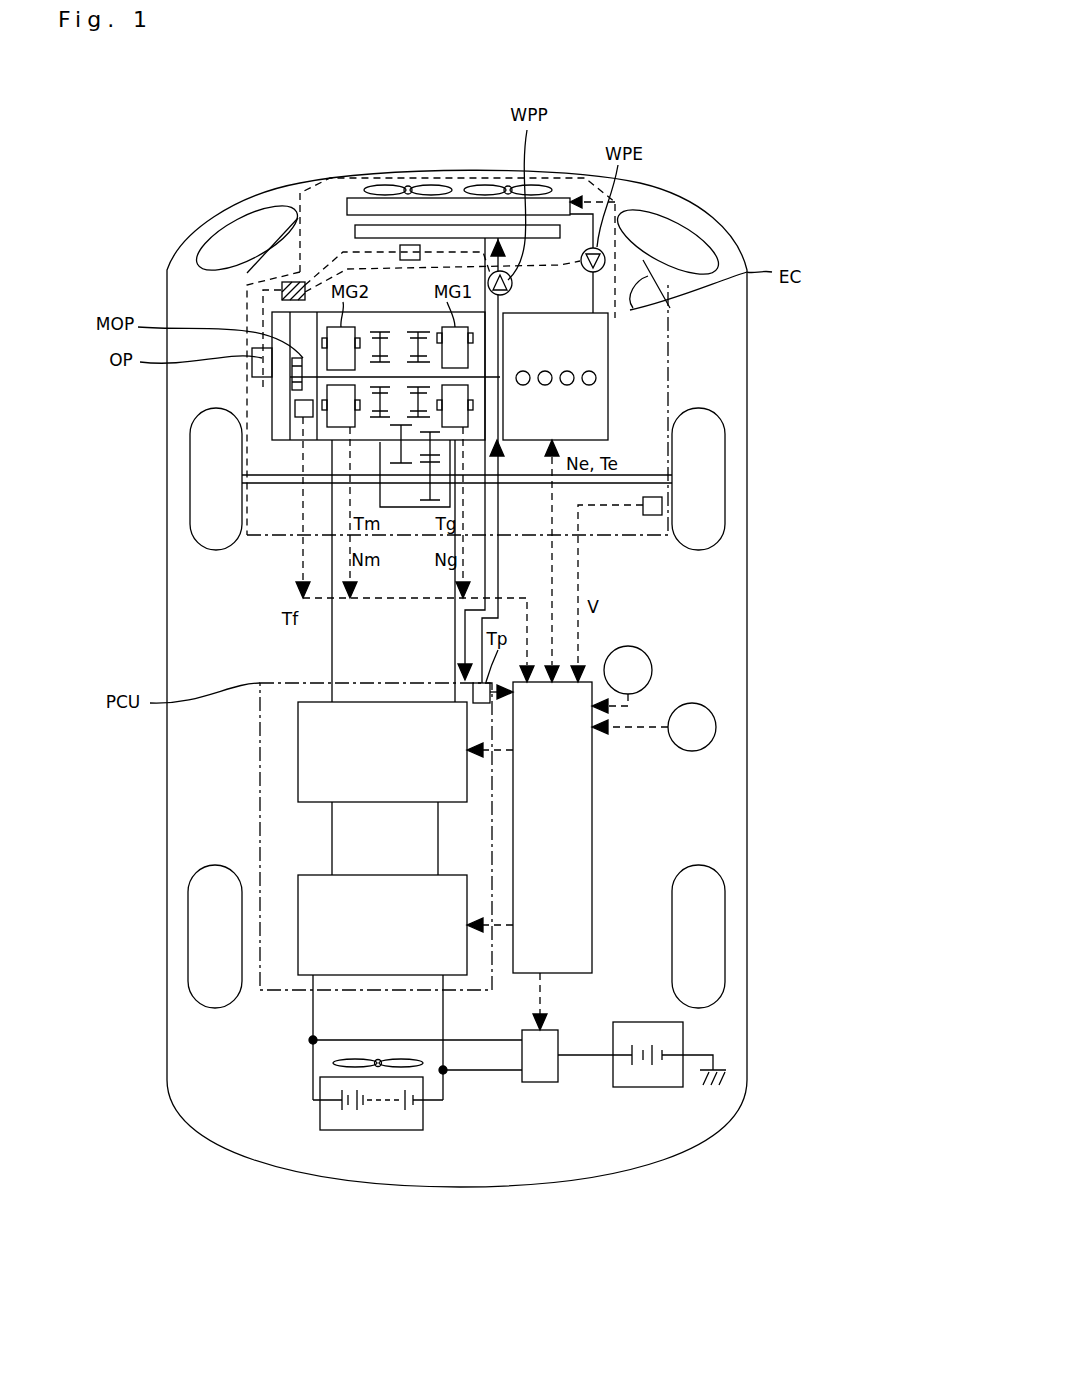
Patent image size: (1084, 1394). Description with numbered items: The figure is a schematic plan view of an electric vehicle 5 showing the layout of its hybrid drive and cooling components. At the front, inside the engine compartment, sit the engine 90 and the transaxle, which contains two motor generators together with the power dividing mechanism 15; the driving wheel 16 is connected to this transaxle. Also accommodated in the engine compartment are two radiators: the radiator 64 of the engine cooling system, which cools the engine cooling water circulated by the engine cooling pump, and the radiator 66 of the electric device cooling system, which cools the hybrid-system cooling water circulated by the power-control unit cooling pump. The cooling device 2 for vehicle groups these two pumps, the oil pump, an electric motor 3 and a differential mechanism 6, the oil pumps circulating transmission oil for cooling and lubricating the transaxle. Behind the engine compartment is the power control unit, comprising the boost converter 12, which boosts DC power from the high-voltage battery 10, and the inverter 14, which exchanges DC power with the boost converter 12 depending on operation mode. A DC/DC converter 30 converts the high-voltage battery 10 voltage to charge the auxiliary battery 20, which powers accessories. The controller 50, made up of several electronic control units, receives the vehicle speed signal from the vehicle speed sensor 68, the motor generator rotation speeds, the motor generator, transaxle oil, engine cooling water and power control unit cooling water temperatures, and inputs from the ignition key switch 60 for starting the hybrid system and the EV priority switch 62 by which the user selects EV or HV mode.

The cooling device for vehicle 2 is at (307, 253).
The electric motor 3 is at (282, 292).
The electric vehicle 5 is at (685, 217).
The differential mechanism 6 is at (405, 245).
The high-voltage battery 10 is at (360, 1130).
The boost converter 12 is at (383, 873).
The inverter 14 is at (298, 750).
The power dividing mechanism 15 is at (388, 326).
The driving wheel 16 is at (190, 478).
The auxiliary battery 20 is at (627, 1008).
The DC/DC converter 30 is at (543, 1082).
The controller 50 is at (592, 793).
The ignition key switch 60 is at (652, 676).
The EV priority switch 62 is at (716, 720).
The radiator 64 is at (347, 203).
The radiator 66 is at (353, 233).
The vehicle speed sensor 68 is at (653, 516).
The engine 90 is at (612, 335).